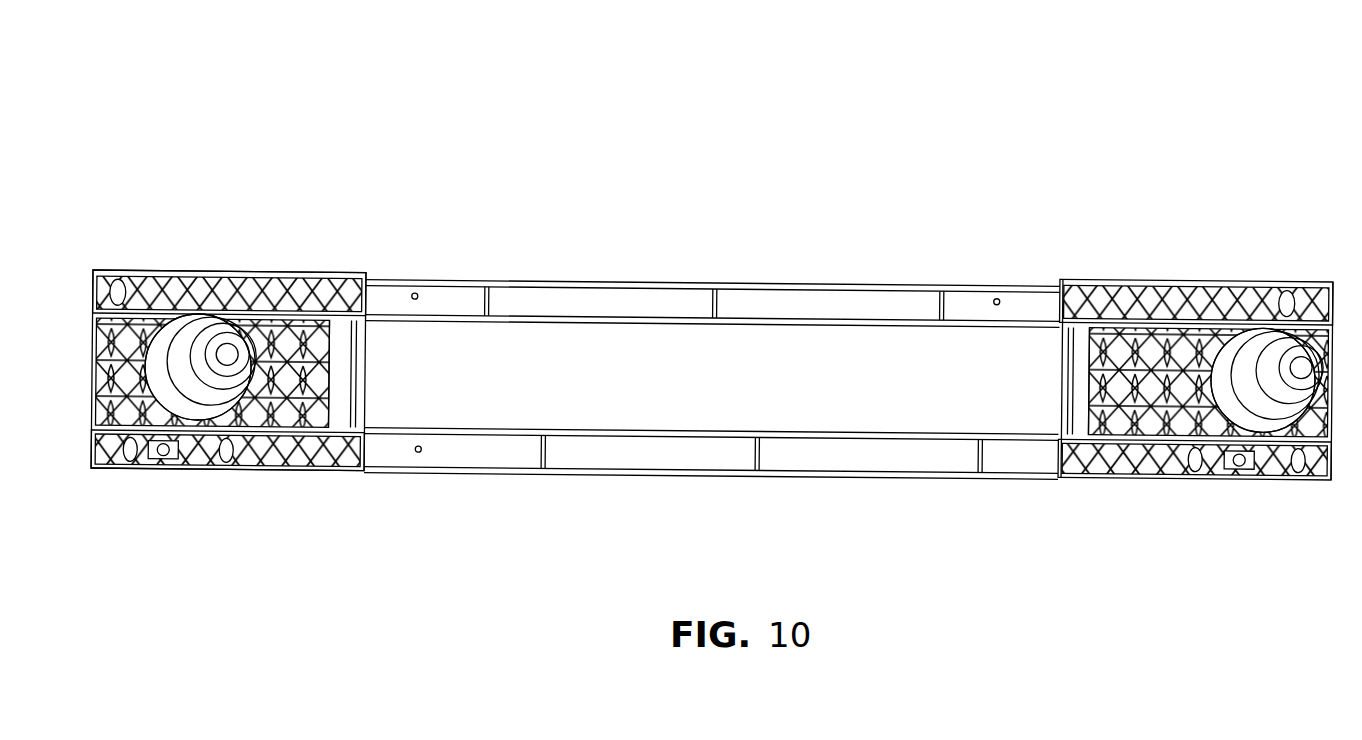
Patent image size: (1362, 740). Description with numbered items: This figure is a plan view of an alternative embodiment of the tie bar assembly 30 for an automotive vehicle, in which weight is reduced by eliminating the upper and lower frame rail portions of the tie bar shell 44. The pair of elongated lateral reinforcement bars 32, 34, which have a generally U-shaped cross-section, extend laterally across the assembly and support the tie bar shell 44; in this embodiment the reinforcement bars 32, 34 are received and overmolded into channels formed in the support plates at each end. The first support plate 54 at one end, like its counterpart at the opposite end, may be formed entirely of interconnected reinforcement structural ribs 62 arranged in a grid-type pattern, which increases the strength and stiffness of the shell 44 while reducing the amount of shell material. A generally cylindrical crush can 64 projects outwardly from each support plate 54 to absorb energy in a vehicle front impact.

The tie bar assembly 30 is at (952, 133).
The elongated lateral reinforcement bar 32 is at (630, 278).
The elongated lateral reinforcement bar 34 is at (655, 470).
The tie bar shell 44 is at (280, 268).
The first support plate 54 is at (362, 372).
The reinforcement structural rib 62 is at (90, 372).
The crush can 64 is at (195, 268).